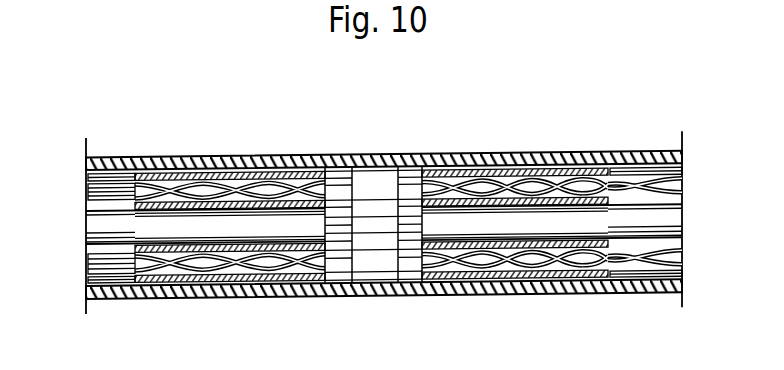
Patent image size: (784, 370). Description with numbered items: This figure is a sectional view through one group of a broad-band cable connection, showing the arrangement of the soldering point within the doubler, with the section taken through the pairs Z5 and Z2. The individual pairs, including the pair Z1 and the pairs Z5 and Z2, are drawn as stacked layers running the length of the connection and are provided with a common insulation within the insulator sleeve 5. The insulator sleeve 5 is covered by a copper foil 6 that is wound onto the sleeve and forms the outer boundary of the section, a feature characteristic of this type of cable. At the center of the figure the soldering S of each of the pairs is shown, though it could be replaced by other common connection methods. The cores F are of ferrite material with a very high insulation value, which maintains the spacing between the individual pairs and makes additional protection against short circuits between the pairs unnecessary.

The cores F is at (192, 157).
The soldering S is at (382, 270).
The copper foil 6 is at (445, 155).
The insulator sleeve 5 is at (502, 157).
The pair Z5 is at (679, 172).
The pair Z1 is at (679, 211).
The pair Z2 is at (680, 267).